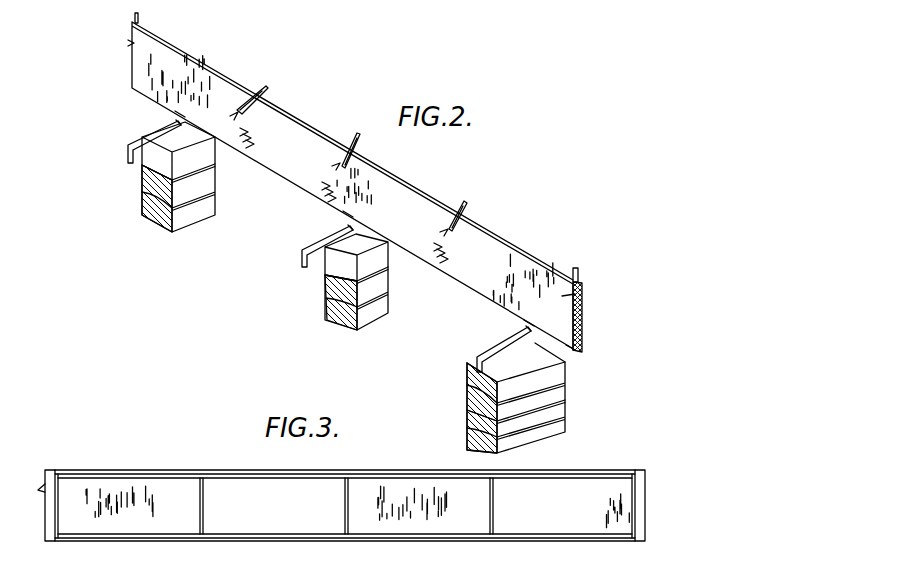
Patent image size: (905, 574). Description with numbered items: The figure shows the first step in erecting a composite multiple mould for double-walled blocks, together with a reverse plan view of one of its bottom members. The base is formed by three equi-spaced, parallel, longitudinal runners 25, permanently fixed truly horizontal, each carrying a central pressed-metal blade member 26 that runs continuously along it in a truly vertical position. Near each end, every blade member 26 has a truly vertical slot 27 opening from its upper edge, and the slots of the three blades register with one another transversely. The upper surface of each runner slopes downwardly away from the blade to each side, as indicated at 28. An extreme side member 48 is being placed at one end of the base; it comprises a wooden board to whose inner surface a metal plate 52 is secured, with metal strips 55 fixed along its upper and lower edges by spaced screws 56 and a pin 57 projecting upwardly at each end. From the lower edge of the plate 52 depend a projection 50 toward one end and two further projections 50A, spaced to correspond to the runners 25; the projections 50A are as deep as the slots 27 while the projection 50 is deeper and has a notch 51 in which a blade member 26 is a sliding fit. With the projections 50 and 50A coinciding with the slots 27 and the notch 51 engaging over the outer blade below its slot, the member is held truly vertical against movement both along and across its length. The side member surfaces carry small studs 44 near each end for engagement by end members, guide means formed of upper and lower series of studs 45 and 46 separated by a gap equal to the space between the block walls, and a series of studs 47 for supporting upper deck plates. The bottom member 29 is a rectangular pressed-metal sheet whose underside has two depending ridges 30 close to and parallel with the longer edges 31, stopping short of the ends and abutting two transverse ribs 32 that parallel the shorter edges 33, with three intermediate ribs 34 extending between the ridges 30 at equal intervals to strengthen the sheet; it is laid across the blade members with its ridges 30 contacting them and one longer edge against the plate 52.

In FIG. 2, the longitudinal runner 25 is at (205, 188).
In FIG. 2, the blade member 26 is at (130, 147).
In FIG. 2, the slot 27 is at (170, 125).
In FIG. 2, the sloping upper surface of runner 28 is at (178, 140).
In FIG. 3, the bottom member 29 is at (542, 490).
In FIG. 3, the depending ridge 30 is at (390, 478).
In FIG. 3, the longer edge 31 is at (430, 476).
In FIG. 3, the transverse depending rib 32 is at (60, 495).
In FIG. 3, the shorter edge 33 is at (68, 462).
In FIG. 3, the intermediate transverse depending rib 34 is at (200, 500).
In FIG. 2, the stud 44 is at (130, 44).
In FIG. 2, the upper guide means 45 is at (274, 87).
In FIG. 2, the lower guide means 46 is at (250, 138).
In FIG. 2, the moulding plate supporting stud 47 is at (240, 115).
In FIG. 2, the extreme side member 48 is at (580, 312).
In FIG. 2, the downwardly-extending projection 50 is at (527, 323).
In FIG. 2, the further downwardly-extending projection 50A is at (178, 113).
In FIG. 2, the notch 51 is at (520, 358).
In FIG. 2, the metal plate 52 is at (556, 330).
In FIG. 2, the metal strip 55 is at (535, 256).
In FIG. 2, the screw 56 is at (578, 343).
In FIG. 2, the pin 57 is at (141, 18).